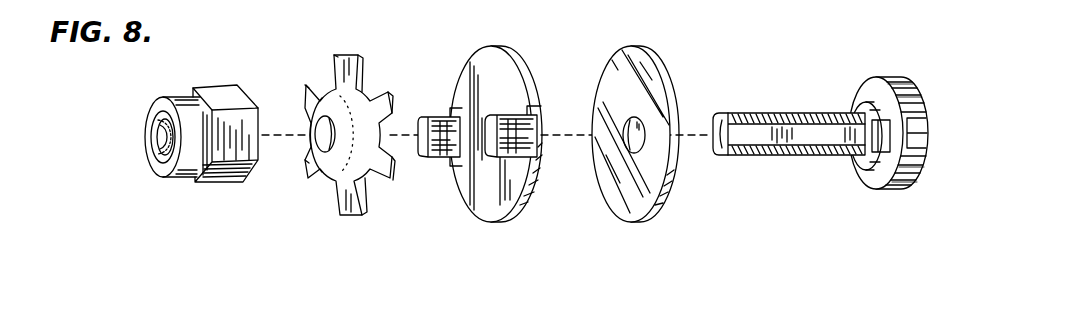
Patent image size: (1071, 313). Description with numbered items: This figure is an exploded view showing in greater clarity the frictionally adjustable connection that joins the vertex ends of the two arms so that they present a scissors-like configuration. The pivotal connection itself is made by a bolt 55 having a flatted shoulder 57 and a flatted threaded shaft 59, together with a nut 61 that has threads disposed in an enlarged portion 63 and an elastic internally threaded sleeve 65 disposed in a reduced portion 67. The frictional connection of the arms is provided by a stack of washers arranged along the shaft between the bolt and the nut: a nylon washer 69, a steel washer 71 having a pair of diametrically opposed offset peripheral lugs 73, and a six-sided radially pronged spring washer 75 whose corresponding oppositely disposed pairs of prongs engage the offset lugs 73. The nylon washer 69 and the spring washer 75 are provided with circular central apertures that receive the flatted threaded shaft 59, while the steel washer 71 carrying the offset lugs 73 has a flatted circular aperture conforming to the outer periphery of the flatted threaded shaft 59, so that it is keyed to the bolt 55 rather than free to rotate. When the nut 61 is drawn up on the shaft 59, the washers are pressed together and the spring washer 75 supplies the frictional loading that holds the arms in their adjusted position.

The bolt 55 is at (904, 122).
The flatted shoulder 57 is at (882, 138).
The flatted threaded shaft 59 is at (817, 135).
The nut 61 is at (179, 114).
The enlarged portion 63 is at (236, 95).
The elastic internally threaded sleeve 65 is at (166, 162).
The reduced portion 67 is at (197, 108).
The nylon washer 69 is at (655, 73).
The steel washer 71 is at (491, 111).
The offset peripheral lugs 73 is at (440, 116).
The spring washer 75 is at (340, 70).